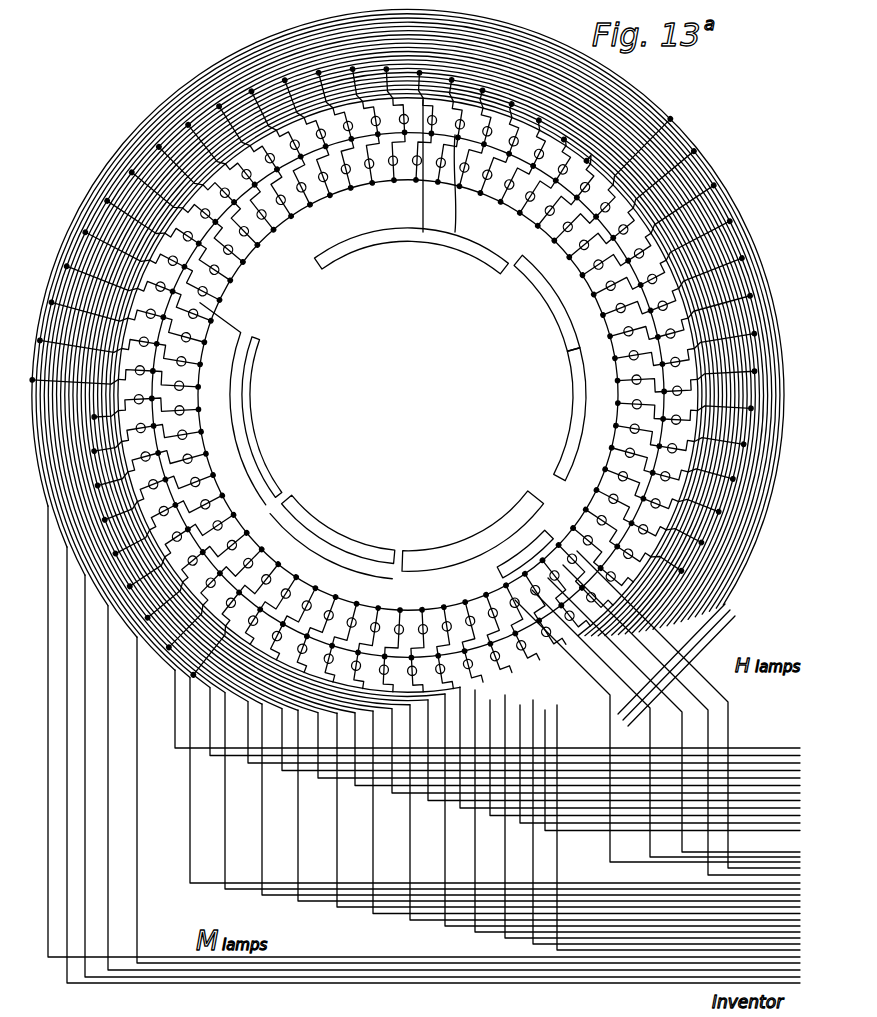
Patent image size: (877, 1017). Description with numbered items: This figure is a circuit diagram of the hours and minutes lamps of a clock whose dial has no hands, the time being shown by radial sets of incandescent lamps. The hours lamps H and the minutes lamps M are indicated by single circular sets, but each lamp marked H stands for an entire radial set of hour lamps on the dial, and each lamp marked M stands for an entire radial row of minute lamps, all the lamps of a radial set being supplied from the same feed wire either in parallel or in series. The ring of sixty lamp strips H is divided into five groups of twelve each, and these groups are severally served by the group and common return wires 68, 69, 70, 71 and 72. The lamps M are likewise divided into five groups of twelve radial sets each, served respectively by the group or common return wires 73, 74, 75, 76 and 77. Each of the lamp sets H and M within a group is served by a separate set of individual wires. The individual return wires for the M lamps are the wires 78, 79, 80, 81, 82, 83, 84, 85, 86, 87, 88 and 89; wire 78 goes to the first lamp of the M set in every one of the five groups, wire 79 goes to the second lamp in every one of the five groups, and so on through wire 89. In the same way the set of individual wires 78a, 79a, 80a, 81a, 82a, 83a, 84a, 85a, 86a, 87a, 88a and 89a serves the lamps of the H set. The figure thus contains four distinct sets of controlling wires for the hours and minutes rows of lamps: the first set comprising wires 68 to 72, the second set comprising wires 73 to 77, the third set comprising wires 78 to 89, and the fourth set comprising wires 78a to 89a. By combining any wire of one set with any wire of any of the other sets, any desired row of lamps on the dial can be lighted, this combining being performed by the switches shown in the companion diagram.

The group and common return wire 68 is at (412, 238).
The group and common return wire 69 is at (423, 549).
The group and common return wire 70 is at (333, 535).
The group and common return wire 71 is at (88, 672).
The group and common return wire 72 is at (238, 351).
The group or common return wire 73 is at (551, 311).
The group or common return wire 74 is at (572, 422).
The group or common return wire 75 is at (527, 577).
The group or common return wire 76 is at (347, 566).
The group or common return wire 77 is at (249, 381).
The individual return wire 78 is at (556, 856).
The individual return wire 79 is at (532, 856).
The individual return wire 80 is at (504, 856).
The individual return wire 81 is at (474, 856).
The individual return wire 82 is at (444, 856).
The individual return wire 83 is at (409, 856).
The individual return wire 84 is at (372, 856).
The individual return wire 85 is at (336, 856).
The individual return wire 86 is at (297, 856).
The individual return wire 87 is at (261, 856).
The individual return wire 88 is at (224, 856).
The individual return wire 89 is at (188, 856).
The individual wire 78a is at (672, 780).
The individual wire 79a is at (653, 776).
The individual wire 80a is at (637, 771).
The individual wire 81a is at (622, 761).
The individual wire 82a is at (605, 764).
The individual wire 83a is at (588, 765).
The individual wire 84a is at (570, 764).
The individual wire 85a is at (551, 761).
The individual wire 86a is at (533, 757).
The individual wire 87a is at (515, 750).
The individual wire 88a is at (496, 739).
The individual wire 89a is at (477, 723).
The hours lamp H is at (455, 240).
The minutes lamp M is at (650, 665).